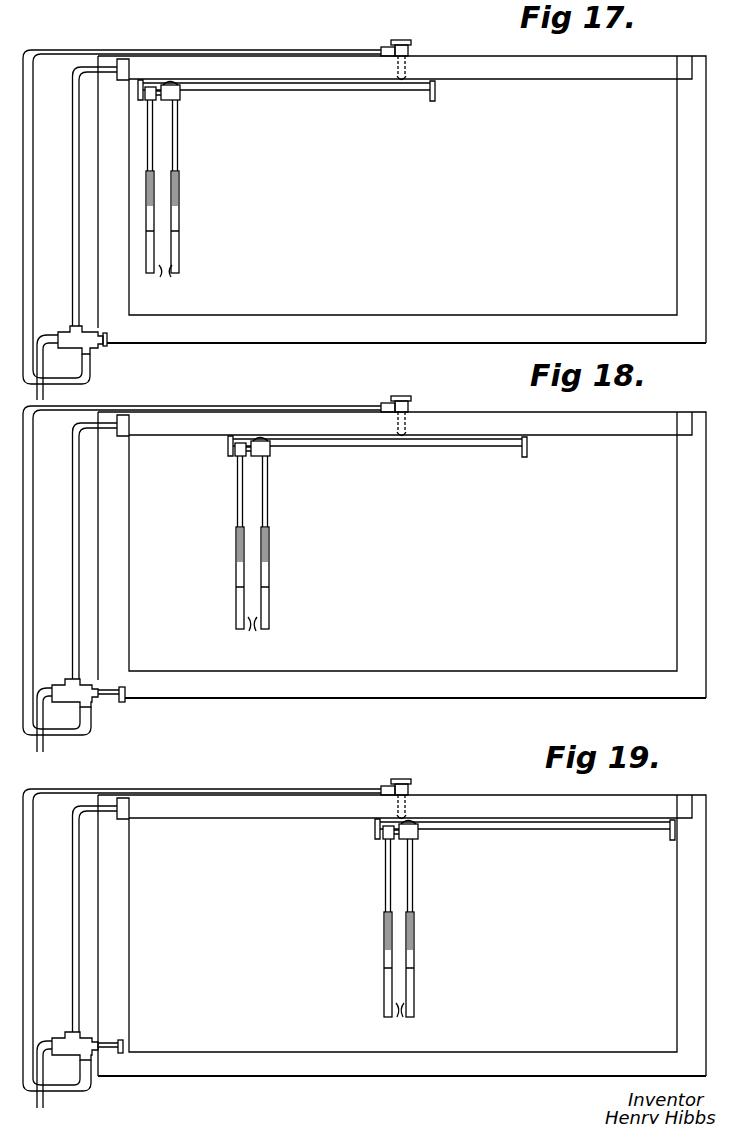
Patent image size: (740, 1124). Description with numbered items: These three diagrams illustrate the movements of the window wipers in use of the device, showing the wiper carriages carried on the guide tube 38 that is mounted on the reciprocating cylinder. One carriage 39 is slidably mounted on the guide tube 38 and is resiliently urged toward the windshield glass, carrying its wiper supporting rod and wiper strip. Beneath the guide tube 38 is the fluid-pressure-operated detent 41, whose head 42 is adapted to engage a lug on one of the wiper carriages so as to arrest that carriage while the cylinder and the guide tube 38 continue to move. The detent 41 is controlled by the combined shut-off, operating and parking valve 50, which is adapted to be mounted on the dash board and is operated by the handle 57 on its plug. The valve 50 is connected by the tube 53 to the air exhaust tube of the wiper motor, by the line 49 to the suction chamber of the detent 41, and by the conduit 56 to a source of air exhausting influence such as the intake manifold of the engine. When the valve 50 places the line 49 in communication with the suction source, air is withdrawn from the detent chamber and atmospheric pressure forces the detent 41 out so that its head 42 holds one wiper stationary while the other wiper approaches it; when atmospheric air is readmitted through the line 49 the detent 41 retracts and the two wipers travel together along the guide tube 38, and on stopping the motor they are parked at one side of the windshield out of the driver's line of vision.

In FIG. 17, the guide tube 38 is at (371, 85).
In FIG. 18, the guide tube 38 is at (512, 448).
In FIG. 17, the carriage 39 is at (181, 91).
In FIG. 18, the carriage 39 is at (271, 448).
In FIG. 19, the carriage 39 is at (405, 841).
In FIG. 17, the detent 41 is at (161, 202).
In FIG. 18, the detent 41 is at (268, 643).
In FIG. 19, the detent 41 is at (393, 941).
In FIG. 17, the head 42 is at (408, 76).
In FIG. 18, the head 42 is at (407, 437).
In FIG. 19, the head 42 is at (416, 832).
In FIG. 17, the line 49 is at (361, 50).
In FIG. 18, the line 49 is at (361, 407).
In FIG. 19, the line 49 is at (362, 789).
In FIG. 17, the valve 50 is at (78, 340).
In FIG. 18, the valve 50 is at (76, 692).
In FIG. 19, the valve 50 is at (76, 1046).
In FIG. 17, the tube 53 is at (72, 294).
In FIG. 18, the tube 53 is at (72, 644).
In FIG. 19, the tube 53 is at (72, 949).
In FIG. 17, the conduit 56 is at (37, 386).
In FIG. 18, the conduit 56 is at (36, 745).
In FIG. 19, the conduit 56 is at (36, 1098).
In FIG. 17, the handle 57 is at (108, 346).
In FIG. 18, the handle 57 is at (122, 702).